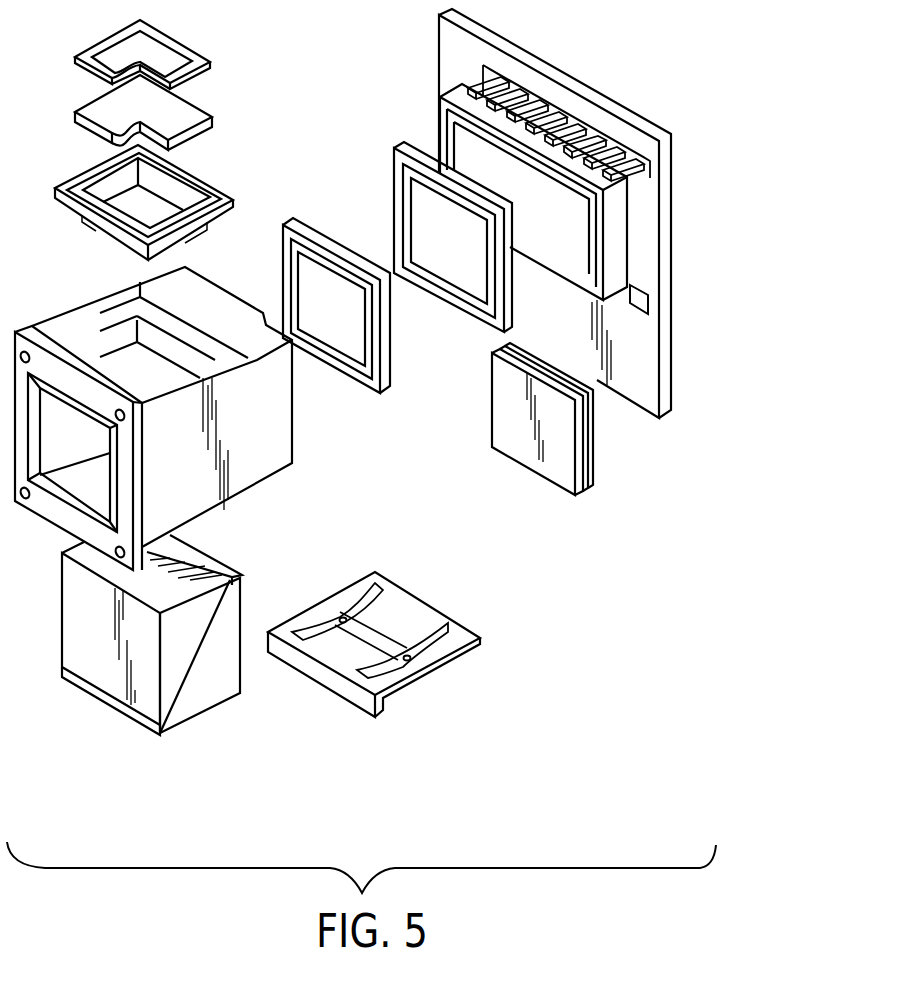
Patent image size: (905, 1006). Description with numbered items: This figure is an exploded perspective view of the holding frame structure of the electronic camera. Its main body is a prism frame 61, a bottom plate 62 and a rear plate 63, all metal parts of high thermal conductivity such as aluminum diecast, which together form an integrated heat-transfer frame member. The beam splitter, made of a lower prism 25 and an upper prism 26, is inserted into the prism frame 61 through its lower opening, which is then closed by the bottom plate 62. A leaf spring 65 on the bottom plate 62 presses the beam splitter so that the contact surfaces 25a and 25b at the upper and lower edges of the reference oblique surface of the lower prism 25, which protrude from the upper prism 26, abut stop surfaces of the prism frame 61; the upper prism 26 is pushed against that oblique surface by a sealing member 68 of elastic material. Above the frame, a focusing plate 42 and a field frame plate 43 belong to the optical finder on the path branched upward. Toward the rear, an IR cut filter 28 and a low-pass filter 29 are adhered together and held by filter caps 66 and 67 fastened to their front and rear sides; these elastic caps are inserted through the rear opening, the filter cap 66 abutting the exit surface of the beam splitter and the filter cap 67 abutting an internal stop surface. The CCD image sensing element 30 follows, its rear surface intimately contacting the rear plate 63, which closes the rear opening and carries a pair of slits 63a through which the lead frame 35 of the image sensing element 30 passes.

The lower prism 25 is at (213, 700).
The contact surface 25a is at (240, 590).
The contact surface 25b is at (127, 714).
The upper prism 26 is at (72, 613).
The IR cut filter 28 is at (577, 497).
The low-pass filter 29 is at (588, 478).
The CCD image sensing element 30 is at (622, 242).
The lead frame 35 is at (650, 180).
The focusing plate 42 is at (207, 124).
The field frame plate 43 is at (203, 60).
The prism frame 61 is at (288, 458).
The bottom plate 62 is at (482, 640).
The rear plate 63 is at (633, 117).
The slits 63a is at (650, 296).
The leaf spring 65 is at (423, 647).
The filter cap 66 is at (385, 392).
The filter cap 67 is at (457, 305).
The sealing member 68 is at (223, 197).